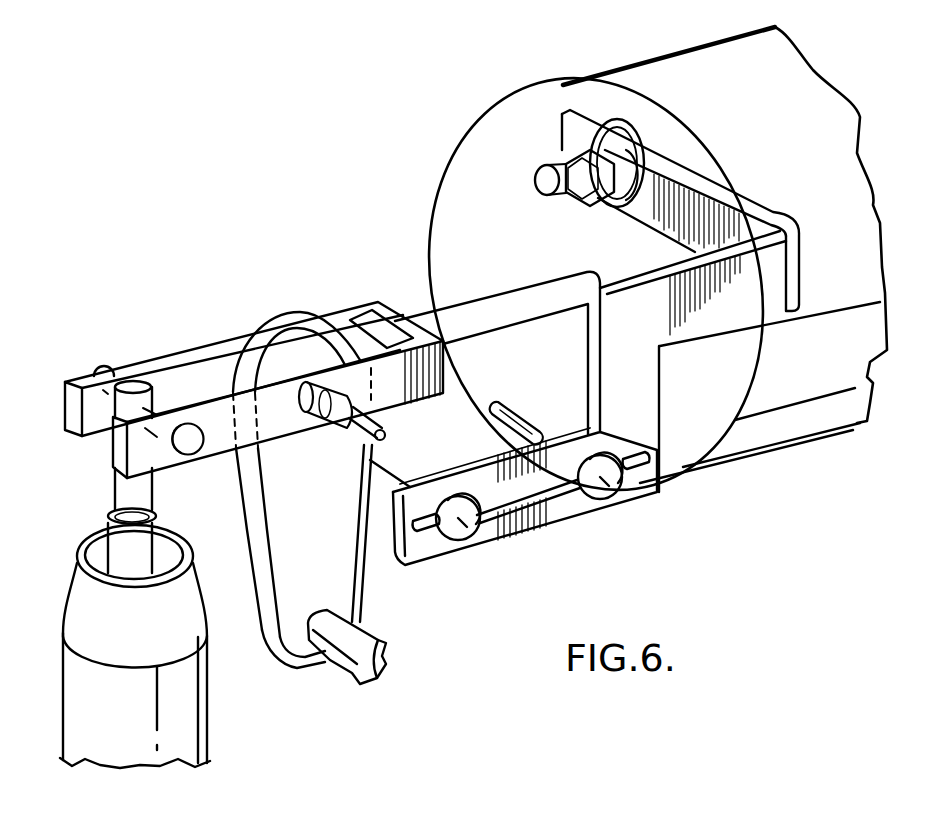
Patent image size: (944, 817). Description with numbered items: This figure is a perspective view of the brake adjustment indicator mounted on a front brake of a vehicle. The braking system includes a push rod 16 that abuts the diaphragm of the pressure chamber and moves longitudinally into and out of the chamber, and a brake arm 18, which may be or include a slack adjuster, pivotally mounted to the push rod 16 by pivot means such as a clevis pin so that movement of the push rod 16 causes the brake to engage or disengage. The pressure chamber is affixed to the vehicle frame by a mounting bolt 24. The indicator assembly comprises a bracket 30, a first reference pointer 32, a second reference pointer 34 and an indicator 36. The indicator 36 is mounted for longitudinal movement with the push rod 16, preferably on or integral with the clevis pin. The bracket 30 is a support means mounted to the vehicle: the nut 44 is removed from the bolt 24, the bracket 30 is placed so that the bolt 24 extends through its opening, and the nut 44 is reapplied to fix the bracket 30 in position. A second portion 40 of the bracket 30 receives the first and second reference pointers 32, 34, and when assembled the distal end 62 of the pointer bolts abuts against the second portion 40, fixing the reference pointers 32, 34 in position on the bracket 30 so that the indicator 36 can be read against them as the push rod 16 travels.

The push rod 16 is at (470, 310).
The brake arm 18 is at (302, 493).
The mounting bolt 24 is at (546, 180).
The bracket 30 is at (767, 297).
The first reference pointer 32 is at (510, 414).
The second reference pointer 34 is at (377, 465).
The indicator 36 is at (385, 434).
The second portion 40 is at (560, 507).
The nut 44 is at (560, 150).
The distal end 62 is at (462, 540).